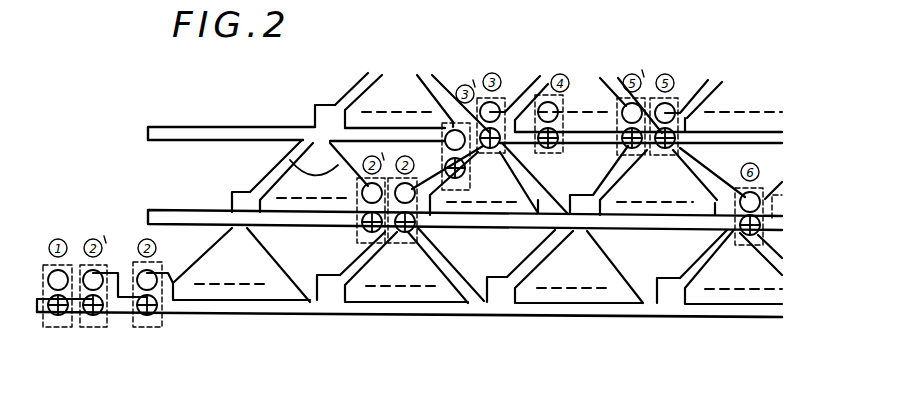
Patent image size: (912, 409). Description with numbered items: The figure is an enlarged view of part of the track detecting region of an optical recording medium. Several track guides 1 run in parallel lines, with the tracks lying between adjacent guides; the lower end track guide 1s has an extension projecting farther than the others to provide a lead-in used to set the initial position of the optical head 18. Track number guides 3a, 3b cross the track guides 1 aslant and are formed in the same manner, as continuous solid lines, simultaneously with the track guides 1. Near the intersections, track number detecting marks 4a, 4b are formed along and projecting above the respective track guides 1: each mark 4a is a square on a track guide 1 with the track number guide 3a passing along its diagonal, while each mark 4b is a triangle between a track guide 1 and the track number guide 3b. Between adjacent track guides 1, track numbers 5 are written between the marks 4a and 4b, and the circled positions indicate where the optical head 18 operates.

The track guide 1 is at (148, 137).
The lower end track guide 1s is at (301, 319).
The track number guide 3a is at (359, 83).
The track number guide 3b is at (291, 159).
The track number detecting mark 4a is at (318, 106).
The track number detecting mark 4b is at (447, 95).
The track number 5 is at (391, 112).
The optical head 18 is at (58, 327).